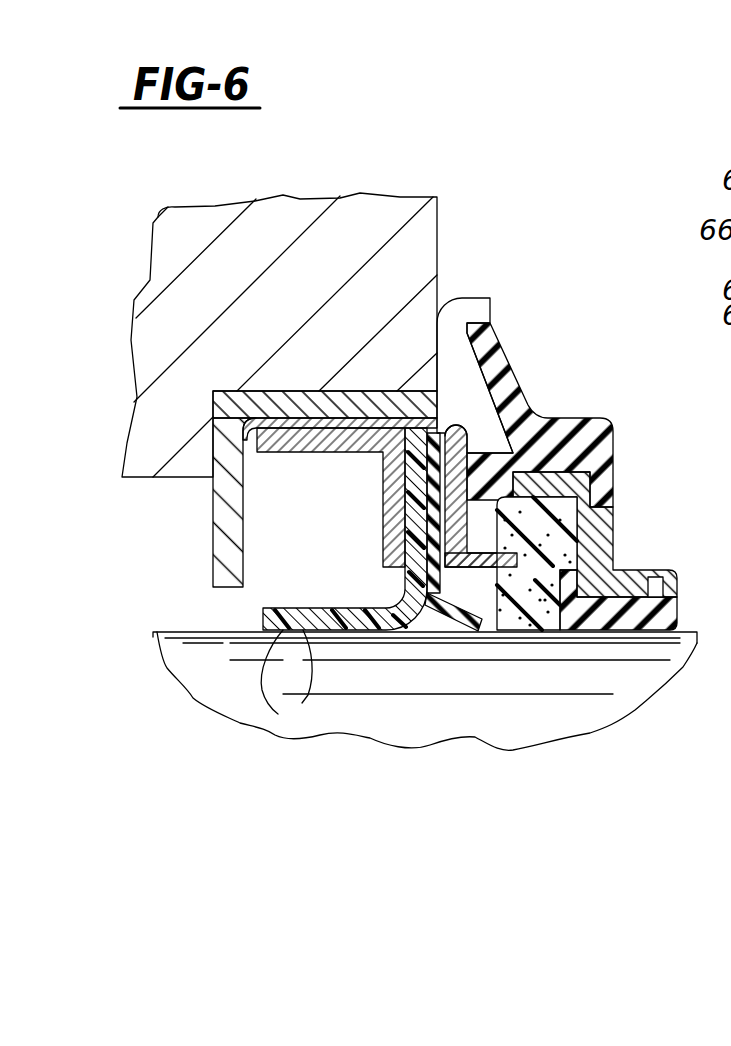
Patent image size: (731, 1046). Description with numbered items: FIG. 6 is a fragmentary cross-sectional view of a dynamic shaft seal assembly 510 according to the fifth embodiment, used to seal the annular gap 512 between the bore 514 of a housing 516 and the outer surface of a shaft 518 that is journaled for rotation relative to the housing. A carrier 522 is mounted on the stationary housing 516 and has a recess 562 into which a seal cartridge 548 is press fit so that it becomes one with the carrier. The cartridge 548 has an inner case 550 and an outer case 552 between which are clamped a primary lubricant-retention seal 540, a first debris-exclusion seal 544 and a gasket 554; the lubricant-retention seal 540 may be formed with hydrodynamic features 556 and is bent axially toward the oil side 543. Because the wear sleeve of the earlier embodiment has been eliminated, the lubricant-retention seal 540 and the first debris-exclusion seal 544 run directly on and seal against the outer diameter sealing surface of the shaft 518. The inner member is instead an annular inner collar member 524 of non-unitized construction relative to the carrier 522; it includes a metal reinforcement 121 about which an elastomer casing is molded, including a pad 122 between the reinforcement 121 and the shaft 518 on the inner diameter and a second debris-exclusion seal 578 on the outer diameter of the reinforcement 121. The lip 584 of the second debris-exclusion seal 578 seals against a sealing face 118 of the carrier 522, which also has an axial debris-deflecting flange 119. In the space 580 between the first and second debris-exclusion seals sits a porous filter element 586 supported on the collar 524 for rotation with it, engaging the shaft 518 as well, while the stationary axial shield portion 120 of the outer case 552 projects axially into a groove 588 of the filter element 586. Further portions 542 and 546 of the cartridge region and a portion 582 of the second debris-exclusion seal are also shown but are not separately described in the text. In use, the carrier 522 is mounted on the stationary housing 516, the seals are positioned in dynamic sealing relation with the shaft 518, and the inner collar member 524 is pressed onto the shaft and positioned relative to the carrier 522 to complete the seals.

The shaft seal assembly 510 is at (606, 341).
The annular gap 512 is at (167, 517).
The bore 514 is at (127, 480).
The housing 516 is at (422, 230).
The shaft 518 is at (372, 728).
The carrier 522 is at (238, 391).
The inner collar member 524 is at (678, 559).
The lubricant-retention seal 540 is at (387, 544).
The inner case flange 542 is at (280, 612).
The oil side 543 is at (113, 627).
The first debris-exclusion seal 544 is at (385, 490).
The curved portion 546 is at (467, 605).
The seal cartridge 548 is at (317, 415).
The inner case 550 is at (300, 448).
The outer case 552 is at (363, 424).
The gasket 554 is at (452, 426).
The hydrodynamic features 556 is at (343, 620).
The recess 562 is at (213, 395).
The second debris-exclusion seal 578 is at (605, 419).
The space 580 is at (500, 610).
The seal body portion 582 is at (577, 452).
The lip 584 is at (497, 365).
The filter element 586 is at (547, 607).
The groove 588 is at (553, 513).
The sealing face 118 is at (483, 357).
The axial debris-deflecting flange 119 is at (483, 305).
The axial shield portion 120 is at (423, 628).
The metal reinforcement 121 is at (664, 581).
The pad 122 is at (663, 634).